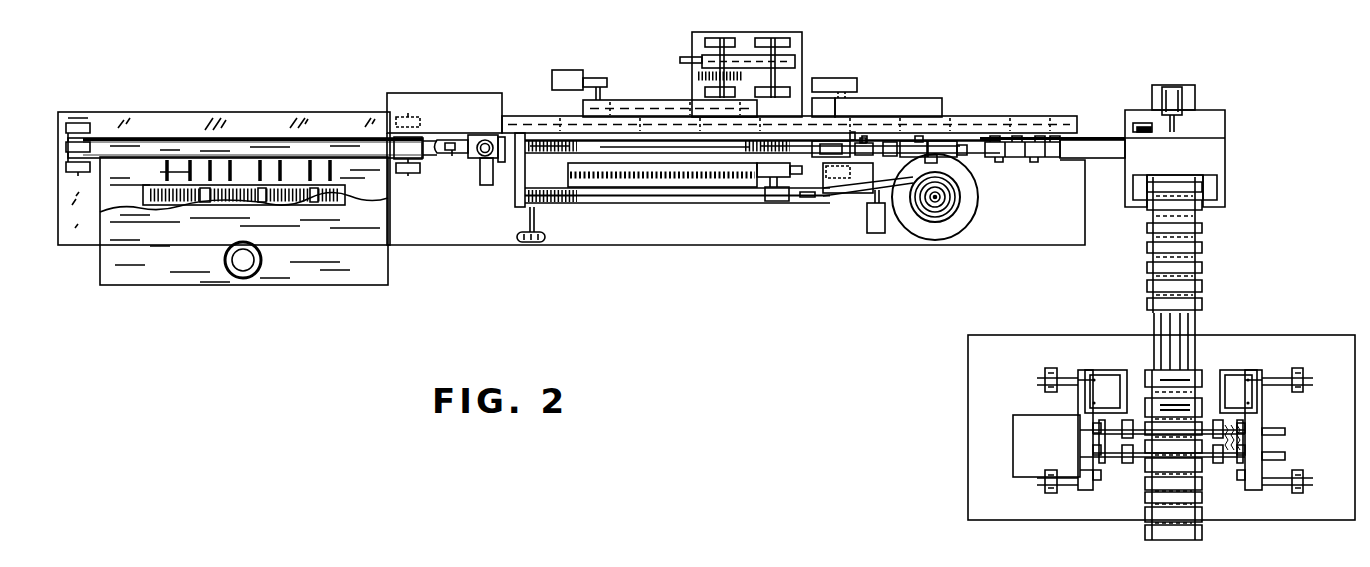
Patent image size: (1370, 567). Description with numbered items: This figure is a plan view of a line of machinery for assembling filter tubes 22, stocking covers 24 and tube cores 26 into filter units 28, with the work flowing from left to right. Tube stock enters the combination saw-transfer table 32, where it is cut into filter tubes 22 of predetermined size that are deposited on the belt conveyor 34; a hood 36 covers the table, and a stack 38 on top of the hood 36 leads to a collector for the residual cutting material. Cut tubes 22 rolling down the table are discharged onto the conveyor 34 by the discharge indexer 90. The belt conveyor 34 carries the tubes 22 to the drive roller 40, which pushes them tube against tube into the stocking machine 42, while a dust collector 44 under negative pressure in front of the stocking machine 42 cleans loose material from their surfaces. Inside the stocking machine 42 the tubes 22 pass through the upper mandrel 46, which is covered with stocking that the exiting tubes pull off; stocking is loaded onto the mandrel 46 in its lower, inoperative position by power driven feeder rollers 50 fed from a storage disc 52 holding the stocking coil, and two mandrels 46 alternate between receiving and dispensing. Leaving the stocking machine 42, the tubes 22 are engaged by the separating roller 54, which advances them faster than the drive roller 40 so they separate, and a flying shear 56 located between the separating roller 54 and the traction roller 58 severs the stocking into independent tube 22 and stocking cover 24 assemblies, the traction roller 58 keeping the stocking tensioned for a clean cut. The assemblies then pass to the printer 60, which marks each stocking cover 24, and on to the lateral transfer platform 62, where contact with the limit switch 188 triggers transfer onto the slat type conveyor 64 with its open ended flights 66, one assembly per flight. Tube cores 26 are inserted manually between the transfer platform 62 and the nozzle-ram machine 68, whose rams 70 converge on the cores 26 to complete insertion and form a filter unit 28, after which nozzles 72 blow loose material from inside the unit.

The filter tubes 22 is at (290, 196).
The stocking covers 24 is at (962, 143).
The tube cores 26 is at (1140, 400).
The filter units 28 is at (1199, 364).
The combination saw-transfer table 32 is at (137, 292).
The belt conveyor 34 is at (178, 136).
The hood 36 is at (362, 282).
The stack 38 is at (250, 278).
The drive roller 40 is at (452, 158).
The stocking machine 42 is at (692, 207).
The dust collector 44 is at (476, 162).
The mandrel 46 is at (650, 149).
The feeder rollers 50 is at (764, 209).
The storage disc 52 is at (979, 213).
The separating roller 54 is at (868, 140).
The flying shear 56 is at (862, 210).
The traction roller 58 is at (925, 138).
The printer 60 is at (1034, 173).
The lateral transfer platform 62 is at (1234, 110).
The slat type conveyor 64 is at (1208, 268).
The flights 66 is at (1202, 502).
The nozzle-ram machine 68 is at (1024, 407).
The rams 70 is at (1120, 372).
The nozzles 72 is at (1111, 471).
The discharge indexer 90 is at (1172, 87).
The limit switch 188 is at (1143, 123).